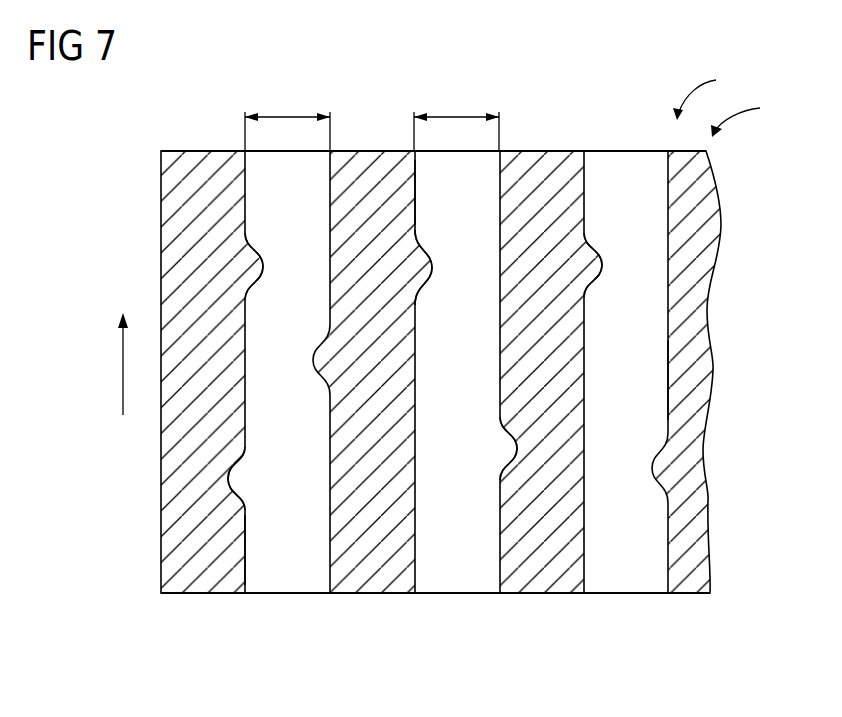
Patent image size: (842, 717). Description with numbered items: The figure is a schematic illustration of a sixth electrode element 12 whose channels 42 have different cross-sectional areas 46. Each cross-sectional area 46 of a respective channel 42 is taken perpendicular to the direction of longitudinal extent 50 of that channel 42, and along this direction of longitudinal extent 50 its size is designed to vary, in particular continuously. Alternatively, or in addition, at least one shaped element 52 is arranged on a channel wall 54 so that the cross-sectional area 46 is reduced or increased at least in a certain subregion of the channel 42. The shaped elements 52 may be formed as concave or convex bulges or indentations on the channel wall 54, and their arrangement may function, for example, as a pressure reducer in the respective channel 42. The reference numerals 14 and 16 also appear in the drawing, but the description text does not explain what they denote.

The electrode element 12 is at (709, 93).
The base material / solid body 14 is at (548, 595).
The outer wall 16 is at (750, 117).
The channel 42 is at (285, 582).
The cross-sectional area 46 is at (290, 115).
The direction of longitudinal extent 50 is at (122, 365).
The shaped element 52 is at (432, 262).
The channel wall 54 is at (416, 197).